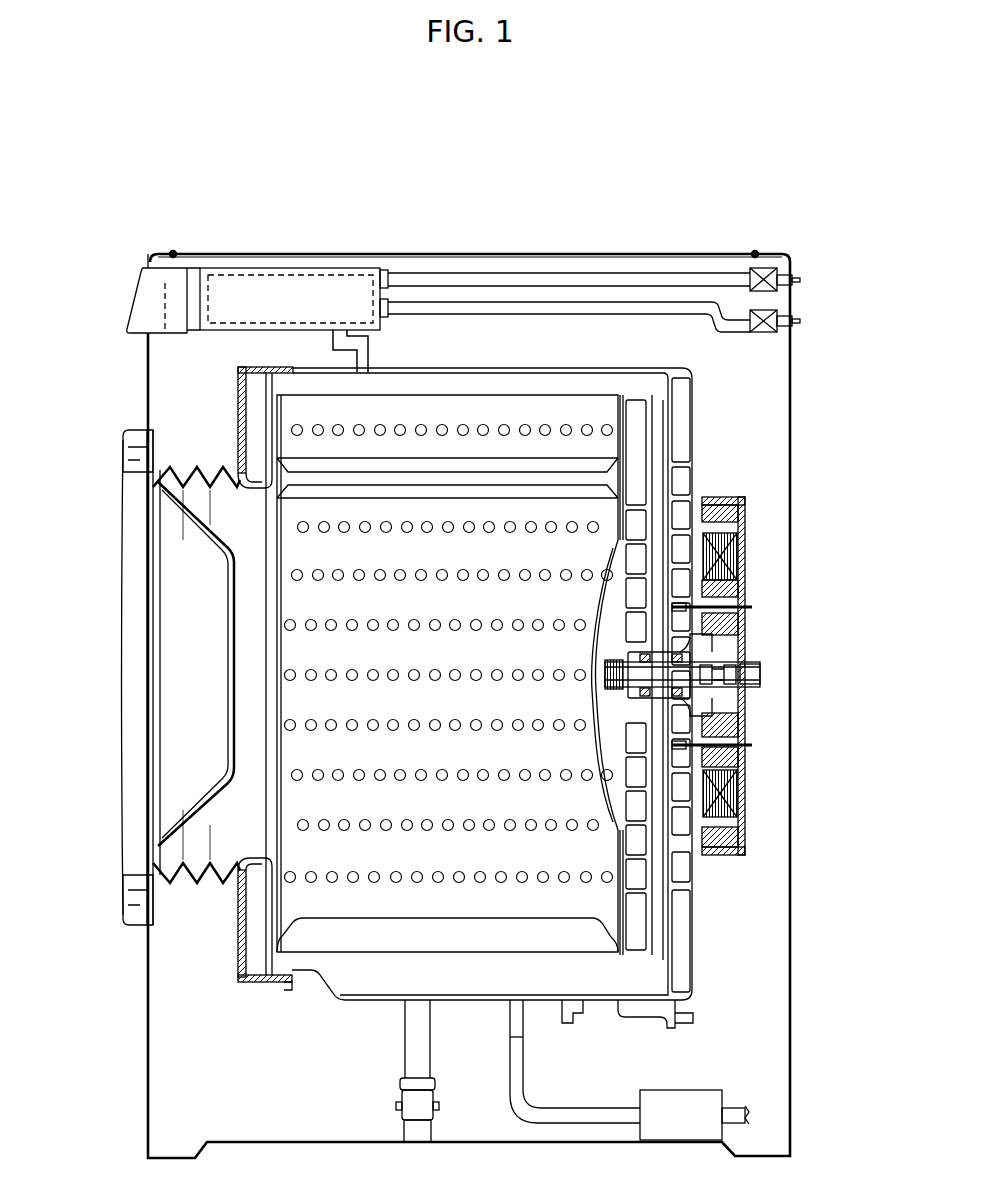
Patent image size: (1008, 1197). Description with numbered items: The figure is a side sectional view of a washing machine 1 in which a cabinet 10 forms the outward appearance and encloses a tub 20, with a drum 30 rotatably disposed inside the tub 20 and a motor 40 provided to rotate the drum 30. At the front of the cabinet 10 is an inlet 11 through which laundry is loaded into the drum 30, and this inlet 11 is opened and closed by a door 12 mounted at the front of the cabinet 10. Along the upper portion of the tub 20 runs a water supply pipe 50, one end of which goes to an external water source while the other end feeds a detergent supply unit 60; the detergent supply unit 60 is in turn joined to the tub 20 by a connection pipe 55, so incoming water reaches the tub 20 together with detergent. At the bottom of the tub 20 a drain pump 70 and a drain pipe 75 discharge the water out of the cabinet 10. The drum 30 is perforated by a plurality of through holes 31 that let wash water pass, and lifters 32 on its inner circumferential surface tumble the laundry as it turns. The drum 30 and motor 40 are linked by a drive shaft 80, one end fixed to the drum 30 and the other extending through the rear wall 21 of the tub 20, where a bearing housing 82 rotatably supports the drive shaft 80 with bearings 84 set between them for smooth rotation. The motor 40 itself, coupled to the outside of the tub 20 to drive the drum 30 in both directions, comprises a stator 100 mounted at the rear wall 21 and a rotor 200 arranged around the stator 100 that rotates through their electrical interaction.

The washing machine 1 is at (466, 174).
The cabinet 10 is at (790, 402).
The inlet 11 is at (198, 496).
The door 12 is at (130, 722).
The tub 20 is at (543, 369).
The rear wall 21 is at (663, 486).
The drum 30 is at (464, 646).
The through holes 31 is at (486, 678).
The lifters 32 is at (484, 918).
The motor 40 is at (773, 676).
The water supply pipe 50 is at (620, 280).
The connection pipe 55 is at (368, 349).
The detergent supply unit 60 is at (291, 268).
The drain pump 70 is at (687, 1092).
The drain pipe 75 is at (521, 1072).
The drive shaft 80 is at (695, 672).
The bearing housing 82 is at (705, 704).
The bearings 84 is at (720, 700).
The stator 100 is at (732, 592).
The rotor 200 is at (745, 505).